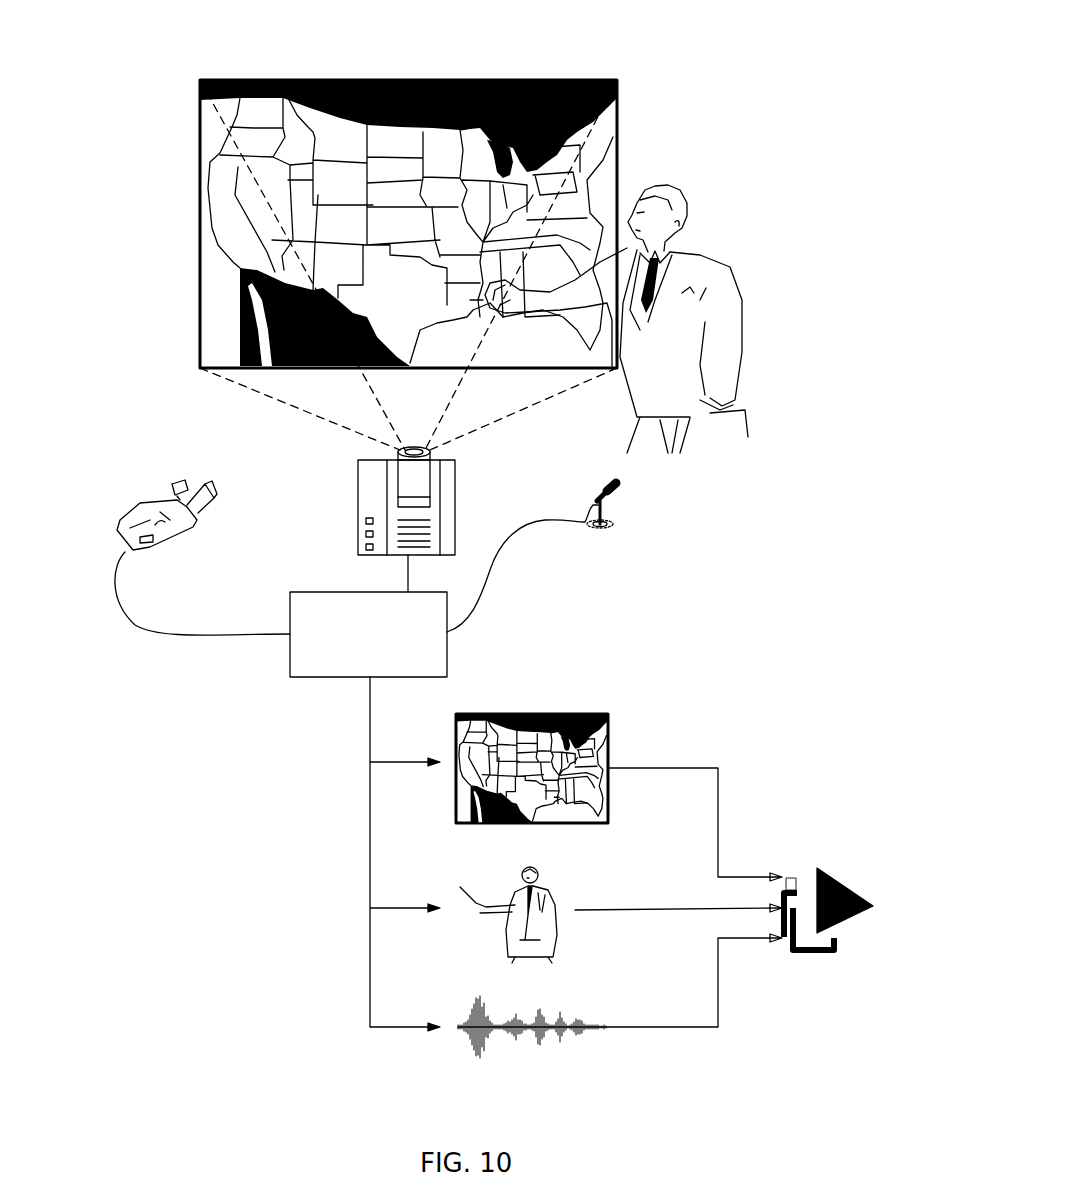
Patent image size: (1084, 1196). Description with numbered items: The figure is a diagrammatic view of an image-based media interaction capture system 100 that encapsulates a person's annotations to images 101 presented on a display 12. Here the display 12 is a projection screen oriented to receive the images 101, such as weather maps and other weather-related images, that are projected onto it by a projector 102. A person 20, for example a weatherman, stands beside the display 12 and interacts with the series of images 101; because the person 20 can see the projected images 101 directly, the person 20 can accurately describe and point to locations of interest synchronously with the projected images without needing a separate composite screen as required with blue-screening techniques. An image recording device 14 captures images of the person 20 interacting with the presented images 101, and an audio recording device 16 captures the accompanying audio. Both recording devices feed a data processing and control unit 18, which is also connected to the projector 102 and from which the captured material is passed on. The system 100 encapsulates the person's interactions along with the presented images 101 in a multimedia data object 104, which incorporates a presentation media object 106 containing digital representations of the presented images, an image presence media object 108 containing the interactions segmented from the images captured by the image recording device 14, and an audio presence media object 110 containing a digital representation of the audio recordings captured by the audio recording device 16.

The image-based media interaction capture system 100 is at (145, 353).
The display 12 is at (438, 224).
The images 101 is at (252, 355).
The person 20 is at (728, 272).
The projector 102 is at (450, 488).
The image recording device 14 is at (187, 520).
The audio recording device 16 is at (602, 510).
The data processing and control unit 18 is at (447, 653).
The presentation media object 106 is at (560, 713).
The image presence media object 108 is at (532, 870).
The audio presence media object 110 is at (543, 1010).
The multimedia data object 104 is at (828, 860).